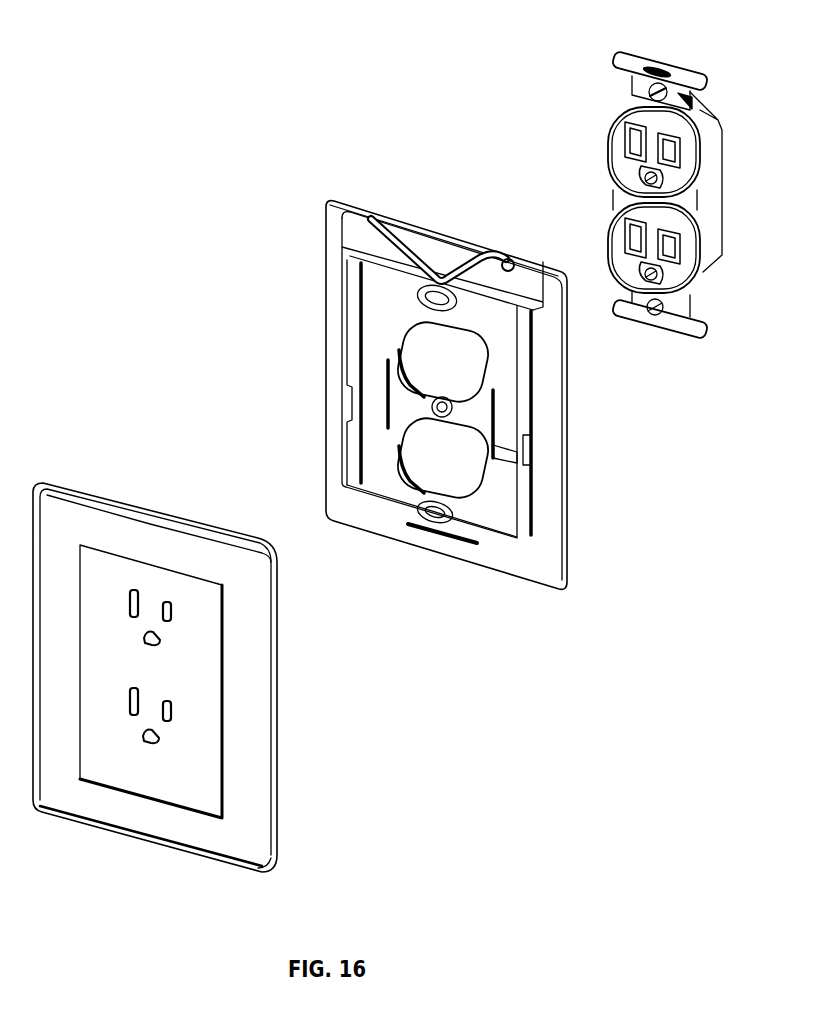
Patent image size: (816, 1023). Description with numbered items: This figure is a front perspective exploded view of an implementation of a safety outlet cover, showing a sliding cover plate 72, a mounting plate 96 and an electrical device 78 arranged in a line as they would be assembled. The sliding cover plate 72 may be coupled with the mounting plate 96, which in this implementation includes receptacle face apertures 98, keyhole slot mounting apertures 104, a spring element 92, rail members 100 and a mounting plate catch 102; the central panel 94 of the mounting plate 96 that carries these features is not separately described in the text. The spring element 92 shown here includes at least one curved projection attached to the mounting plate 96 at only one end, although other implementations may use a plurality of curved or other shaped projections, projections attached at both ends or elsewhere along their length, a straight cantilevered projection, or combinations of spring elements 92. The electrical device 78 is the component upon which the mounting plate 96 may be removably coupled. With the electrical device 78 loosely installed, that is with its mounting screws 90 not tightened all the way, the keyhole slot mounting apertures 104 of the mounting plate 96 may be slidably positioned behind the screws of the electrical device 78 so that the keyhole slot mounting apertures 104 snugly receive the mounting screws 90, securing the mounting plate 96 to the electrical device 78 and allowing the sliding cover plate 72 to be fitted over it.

The sliding cover plate 72 is at (278, 733).
The electrical device 78 is at (712, 160).
The mounting screws 90 is at (640, 91).
The spring element 92 is at (370, 223).
The adapter plate 94 is at (348, 402).
The mounting plate 96 is at (367, 513).
The receptacle face apertures 98 is at (450, 365).
The rail members 100 is at (533, 514).
The mounting plate catch 102 is at (503, 463).
The keyhole slot mounting apertures 104 is at (435, 522).